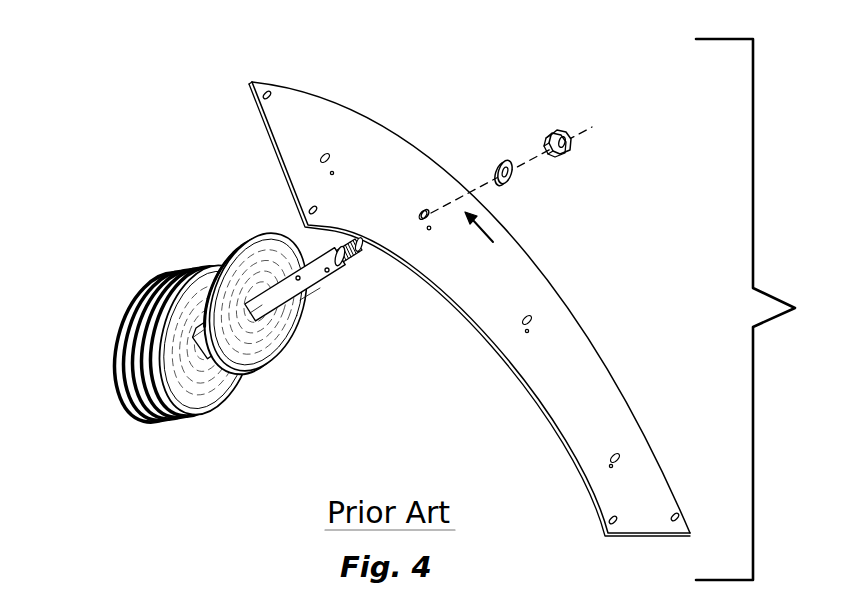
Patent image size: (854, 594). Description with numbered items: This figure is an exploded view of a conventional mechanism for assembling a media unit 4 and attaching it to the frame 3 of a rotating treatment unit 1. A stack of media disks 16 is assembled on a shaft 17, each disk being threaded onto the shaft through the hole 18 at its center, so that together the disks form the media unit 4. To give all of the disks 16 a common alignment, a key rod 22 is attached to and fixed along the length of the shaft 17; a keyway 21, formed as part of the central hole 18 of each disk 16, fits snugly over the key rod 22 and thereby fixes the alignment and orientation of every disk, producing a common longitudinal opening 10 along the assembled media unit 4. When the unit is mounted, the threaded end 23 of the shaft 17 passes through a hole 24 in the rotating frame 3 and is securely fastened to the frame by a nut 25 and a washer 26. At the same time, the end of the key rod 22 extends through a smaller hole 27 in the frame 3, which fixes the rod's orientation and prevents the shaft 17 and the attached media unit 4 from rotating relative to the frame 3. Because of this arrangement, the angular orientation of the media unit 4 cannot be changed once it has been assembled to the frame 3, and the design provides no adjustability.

The rotating treatment unit 1 is at (197, 144).
The frame 3 is at (385, 125).
The media unit 4 is at (222, 407).
The common longitudinal opening 10 is at (123, 337).
The media disks 16 is at (210, 252).
The shaft 17 is at (307, 263).
The hole 18 is at (197, 320).
The keyway 21 is at (263, 318).
The key rod 22 is at (316, 293).
The threaded end 23 is at (362, 264).
The hole 24 is at (426, 210).
The nut 25 is at (563, 132).
The washer 26 is at (503, 162).
The smaller hole 27 is at (428, 231).